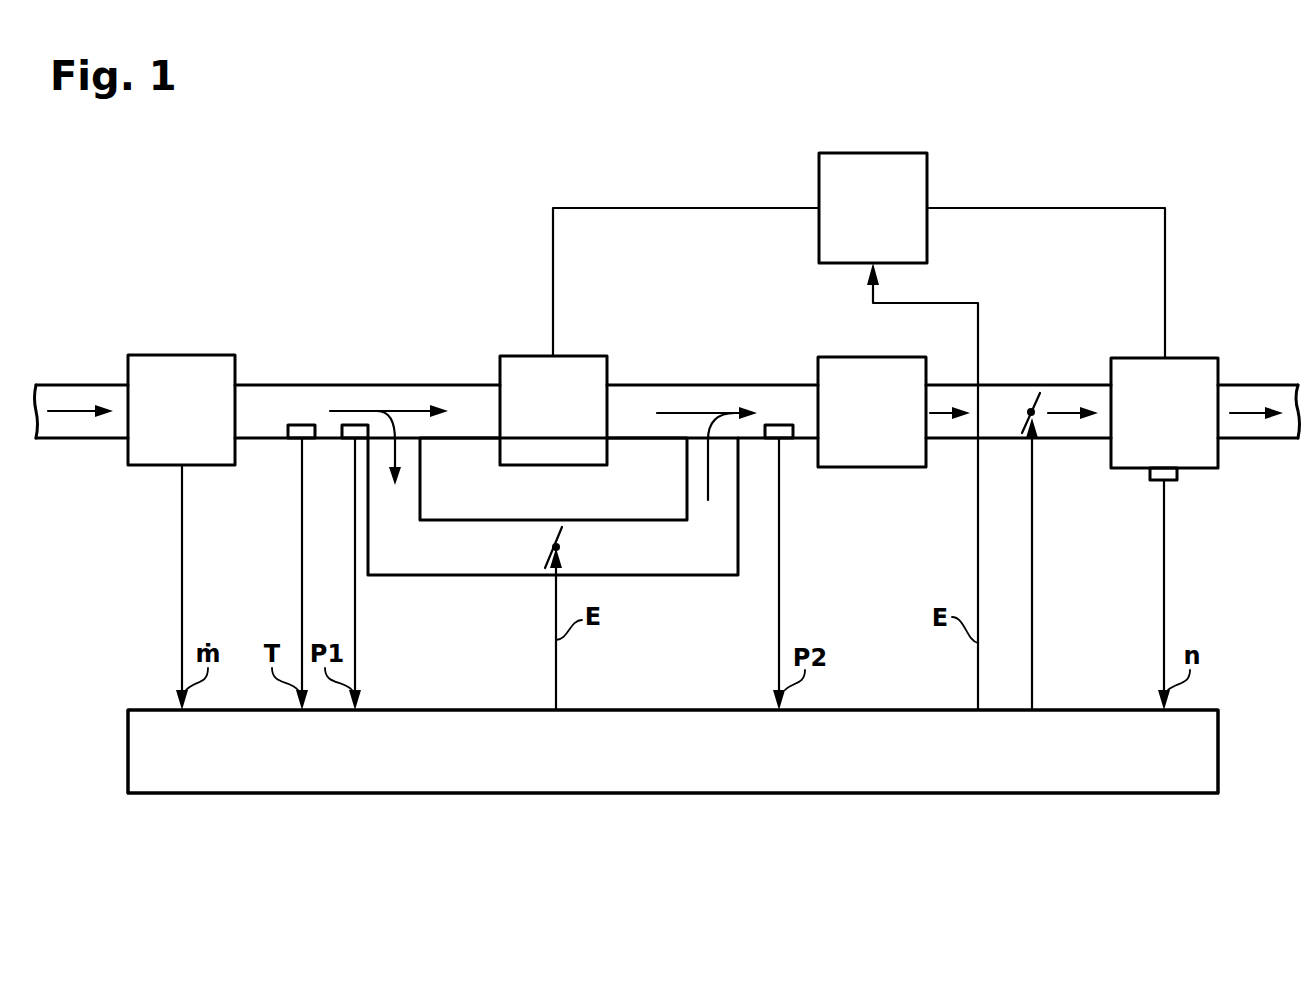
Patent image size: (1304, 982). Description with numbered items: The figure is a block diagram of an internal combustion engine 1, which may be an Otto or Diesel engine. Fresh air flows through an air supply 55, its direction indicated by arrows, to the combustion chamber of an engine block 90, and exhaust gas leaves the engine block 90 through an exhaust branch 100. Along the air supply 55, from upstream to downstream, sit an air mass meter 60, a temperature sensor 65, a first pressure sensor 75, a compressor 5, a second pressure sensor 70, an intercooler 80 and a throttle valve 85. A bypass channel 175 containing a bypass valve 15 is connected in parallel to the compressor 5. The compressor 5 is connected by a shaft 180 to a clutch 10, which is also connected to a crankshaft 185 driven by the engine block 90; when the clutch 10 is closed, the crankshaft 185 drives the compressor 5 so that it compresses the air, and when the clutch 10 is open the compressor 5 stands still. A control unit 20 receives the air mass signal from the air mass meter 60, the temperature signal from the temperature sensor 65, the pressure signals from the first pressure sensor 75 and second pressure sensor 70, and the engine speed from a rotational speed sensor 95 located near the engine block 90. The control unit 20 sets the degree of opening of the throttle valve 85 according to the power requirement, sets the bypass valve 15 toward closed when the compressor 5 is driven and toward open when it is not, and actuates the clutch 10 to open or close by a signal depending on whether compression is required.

The internal combustion engine 1 is at (385, 210).
The compressor 5 is at (522, 355).
The clutch 10 is at (929, 182).
The bypass valve 15 is at (548, 528).
The control unit 20 is at (712, 710).
The air supply 55 is at (73, 390).
The air mass meter 60 is at (182, 355).
The temperature sensor 65 is at (295, 438).
The second pressure sensor 70 is at (785, 438).
The first pressure sensor 75 is at (349, 438).
The intercooler 80 is at (875, 467).
The throttle valve 85 is at (1035, 393).
The engine block 90 is at (1192, 357).
The rotational speed sensor 95 is at (1172, 483).
The exhaust branch 100 is at (1262, 383).
The bypass channel 175 is at (631, 565).
The shaft 180 is at (700, 208).
The crankshaft 185 is at (1112, 208).